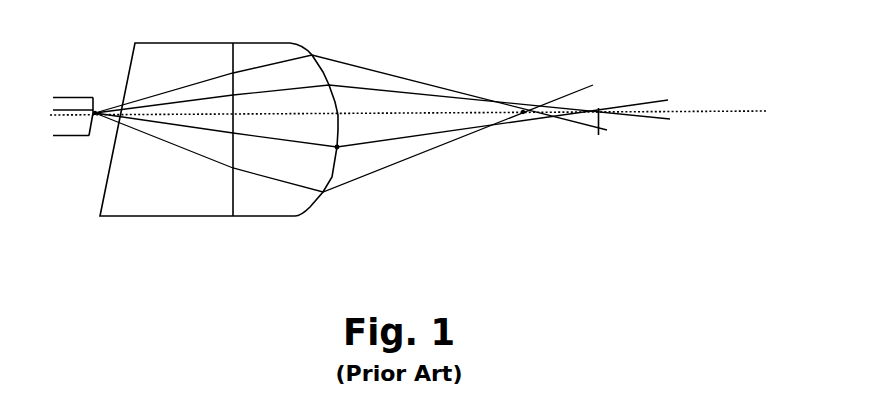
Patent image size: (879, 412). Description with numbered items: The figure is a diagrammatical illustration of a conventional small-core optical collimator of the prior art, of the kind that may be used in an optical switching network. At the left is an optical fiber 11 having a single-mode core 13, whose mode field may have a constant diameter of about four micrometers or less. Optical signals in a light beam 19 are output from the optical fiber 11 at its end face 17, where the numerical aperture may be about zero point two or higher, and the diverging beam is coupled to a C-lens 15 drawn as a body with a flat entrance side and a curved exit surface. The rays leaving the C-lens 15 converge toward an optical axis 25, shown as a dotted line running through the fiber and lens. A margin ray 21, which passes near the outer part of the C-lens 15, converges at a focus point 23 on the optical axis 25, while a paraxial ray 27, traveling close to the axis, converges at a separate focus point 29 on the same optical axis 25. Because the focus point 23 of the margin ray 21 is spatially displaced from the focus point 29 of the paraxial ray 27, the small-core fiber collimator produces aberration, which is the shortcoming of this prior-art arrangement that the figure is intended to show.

The optical fiber 11 is at (74, 133).
The single-mode core 13 is at (79, 109).
The C-lens 15 is at (168, 58).
The end face 17 is at (96, 110).
The light beam 19 is at (108, 127).
The margin ray 21 is at (312, 56).
The focus point 23 is at (523, 112).
The optical axis 25 is at (717, 109).
The paraxial ray 27 is at (337, 148).
The focus point 29 is at (599, 133).